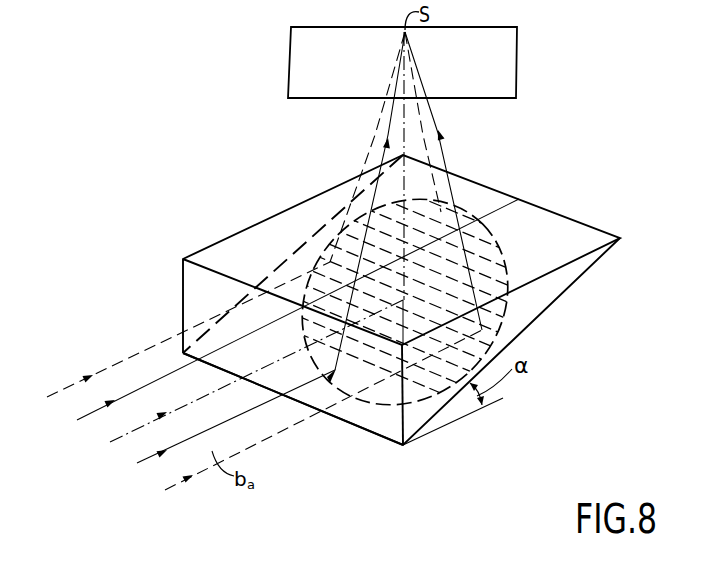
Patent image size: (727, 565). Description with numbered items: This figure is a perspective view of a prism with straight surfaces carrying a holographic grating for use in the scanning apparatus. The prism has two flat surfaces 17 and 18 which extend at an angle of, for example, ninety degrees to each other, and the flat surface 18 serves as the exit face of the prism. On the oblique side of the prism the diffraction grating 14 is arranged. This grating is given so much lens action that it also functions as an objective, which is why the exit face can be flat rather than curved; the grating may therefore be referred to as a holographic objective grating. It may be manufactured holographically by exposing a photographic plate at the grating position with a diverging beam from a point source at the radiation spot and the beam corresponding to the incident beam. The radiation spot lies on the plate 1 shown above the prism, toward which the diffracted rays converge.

The screen / image plane 1 is at (517, 63).
The diffraction grating 14 is at (490, 257).
The flat surface 17 is at (377, 427).
The flat surface 18 is at (249, 247).